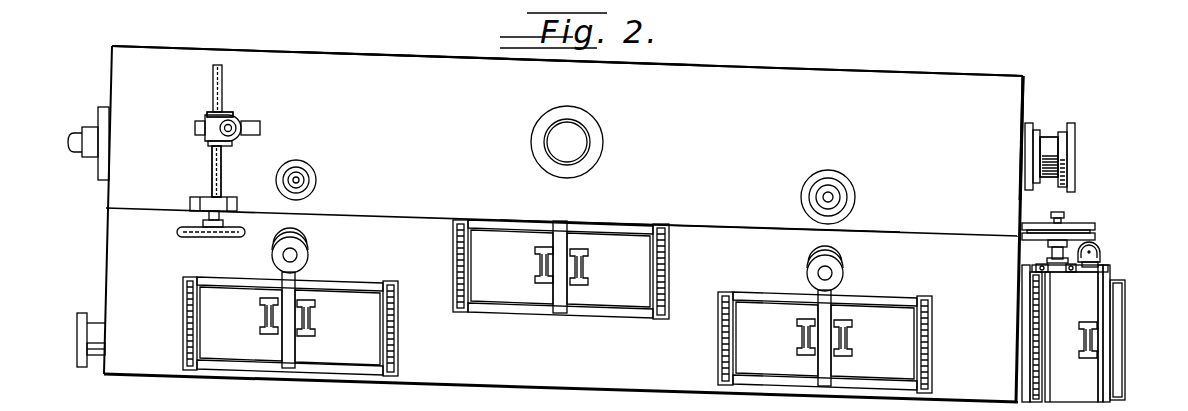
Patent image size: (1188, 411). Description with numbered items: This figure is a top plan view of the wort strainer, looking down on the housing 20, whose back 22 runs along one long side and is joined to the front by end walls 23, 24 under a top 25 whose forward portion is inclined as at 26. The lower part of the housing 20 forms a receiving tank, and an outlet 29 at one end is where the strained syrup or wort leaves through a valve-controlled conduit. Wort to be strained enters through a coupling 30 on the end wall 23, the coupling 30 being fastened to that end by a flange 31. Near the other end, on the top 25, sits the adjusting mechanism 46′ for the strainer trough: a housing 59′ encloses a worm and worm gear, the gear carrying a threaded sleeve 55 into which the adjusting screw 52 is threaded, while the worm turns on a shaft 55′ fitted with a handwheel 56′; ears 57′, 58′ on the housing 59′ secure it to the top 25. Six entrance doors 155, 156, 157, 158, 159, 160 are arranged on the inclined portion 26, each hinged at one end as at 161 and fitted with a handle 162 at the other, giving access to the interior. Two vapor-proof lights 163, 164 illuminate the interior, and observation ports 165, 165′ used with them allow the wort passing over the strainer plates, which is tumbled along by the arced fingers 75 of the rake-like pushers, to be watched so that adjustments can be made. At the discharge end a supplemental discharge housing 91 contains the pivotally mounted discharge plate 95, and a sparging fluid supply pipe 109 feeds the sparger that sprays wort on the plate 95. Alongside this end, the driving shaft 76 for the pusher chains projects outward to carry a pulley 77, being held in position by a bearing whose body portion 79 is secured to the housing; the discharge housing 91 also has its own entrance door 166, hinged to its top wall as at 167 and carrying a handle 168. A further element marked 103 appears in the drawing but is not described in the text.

The housing 20 is at (1035, 52).
The back 22 is at (697, 64).
The end wall 23 is at (1028, 101).
The end wall 24 is at (104, 195).
The top 25 is at (455, 68).
The inclined portion of the top 26 is at (746, 236).
The outlet 29 is at (85, 312).
The coupling 30 is at (1052, 178).
The flange 31 is at (1036, 126).
The adjusting mechanism 46′ is at (198, 117).
The adjusting screw 52 is at (237, 126).
The threaded sleeve 55 is at (236, 136).
The shaft 55′ is at (212, 176).
The handwheel 56′ is at (201, 238).
The ear 57′ is at (203, 135).
The ear 58′ is at (262, 130).
The housing 59′ is at (232, 119).
The driving shaft 76 is at (1052, 252).
The pulley 77 is at (1068, 223).
The body portion 79 is at (1110, 281).
The discharge housing 91 is at (1130, 272).
The discharge plate 95 is at (1118, 312).
The base 103 is at (1051, 407).
The sparging fluid supply pipe 109 is at (1097, 250).
The entrance door 155 is at (892, 322).
The entrance door 156 is at (767, 312).
The entrance door 157 is at (643, 258).
The entrance door 158 is at (505, 296).
The entrance door 159 is at (358, 298).
The entrance door 160 is at (237, 296).
The hinge 161 is at (190, 318).
The handle 162 is at (272, 350).
The vapor-proof light 163 is at (856, 199).
The vapor-proof light 164 is at (318, 181).
The observation port 165 is at (845, 272).
The observation port 165′ is at (310, 251).
The entrance door 166 is at (1112, 281).
The hinge 167 is at (1040, 337).
The handle 168 is at (1078, 342).
The finger 75 is at (818, 406).